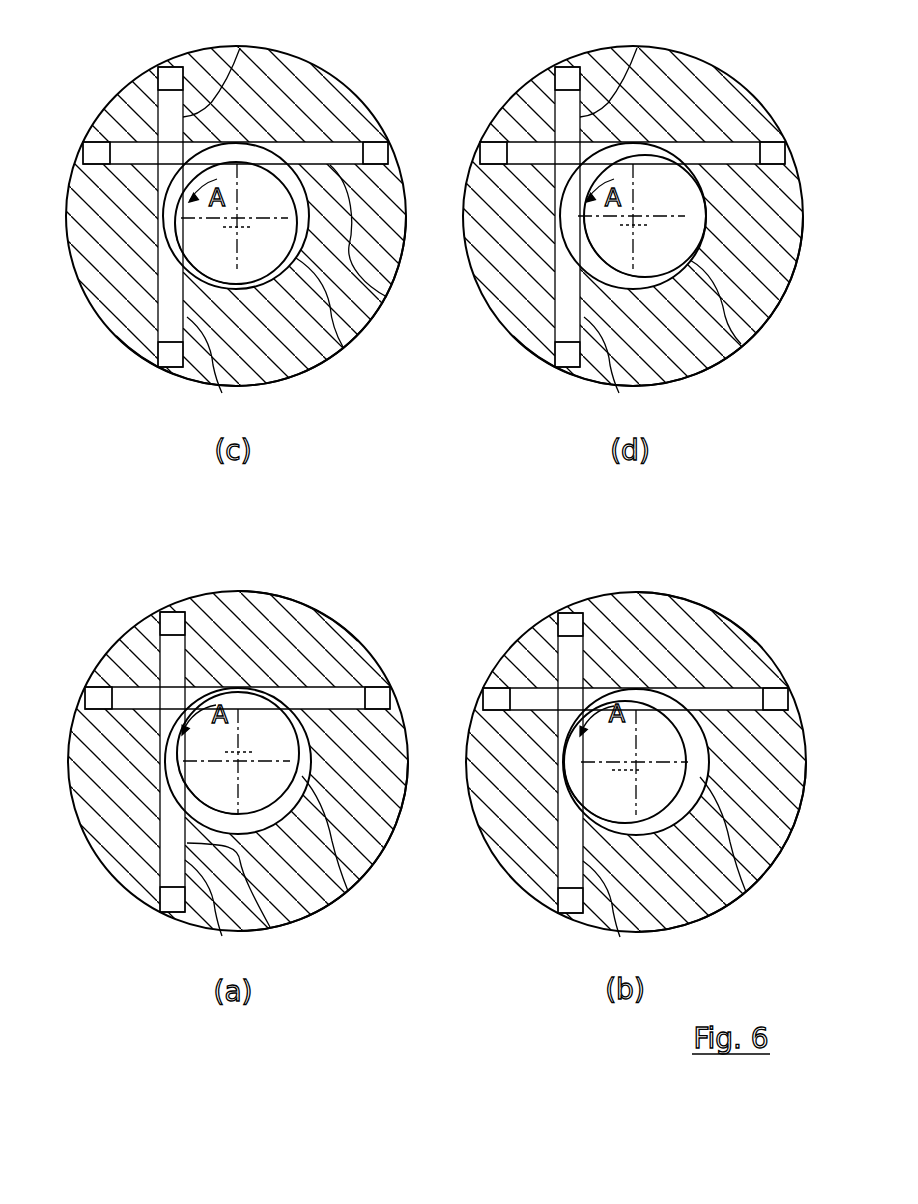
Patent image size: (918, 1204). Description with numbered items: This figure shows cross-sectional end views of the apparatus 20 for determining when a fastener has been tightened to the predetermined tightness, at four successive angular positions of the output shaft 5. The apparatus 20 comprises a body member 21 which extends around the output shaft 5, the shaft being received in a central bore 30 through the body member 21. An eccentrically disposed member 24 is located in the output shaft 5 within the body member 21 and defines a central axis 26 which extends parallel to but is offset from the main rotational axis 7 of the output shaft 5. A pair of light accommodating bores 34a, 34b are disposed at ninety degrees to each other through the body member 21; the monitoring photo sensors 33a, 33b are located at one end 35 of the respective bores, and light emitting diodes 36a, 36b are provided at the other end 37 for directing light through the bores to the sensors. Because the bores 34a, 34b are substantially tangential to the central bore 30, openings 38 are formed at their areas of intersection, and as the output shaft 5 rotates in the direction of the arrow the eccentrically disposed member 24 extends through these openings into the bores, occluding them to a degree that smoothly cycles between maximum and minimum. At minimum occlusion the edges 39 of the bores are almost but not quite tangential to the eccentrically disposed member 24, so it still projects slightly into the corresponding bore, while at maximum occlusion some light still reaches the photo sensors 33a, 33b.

The output shaft 5 is at (494, 435).
The main rotational axis 7 is at (434, 489).
The apparatus 20 is at (89, 155).
The body member 21 is at (436, 489).
The eccentrically disposed member 24 is at (355, 566).
The central axis 26 is at (442, 494).
The central bore 30 is at (522, 574).
The photo sensor 33a is at (595, 398).
The photo sensor 33b is at (337, 649).
The light accommodating bore 34a is at (442, 383).
The light accommodating bore 34b is at (405, 520).
The one end 35 is at (494, 541).
The light emitting diode 36a is at (281, 393).
The light emitting diode 36b is at (406, 320).
The other end 37 is at (314, 360).
The openings 38 is at (440, 489).
The edges 39 is at (442, 483).